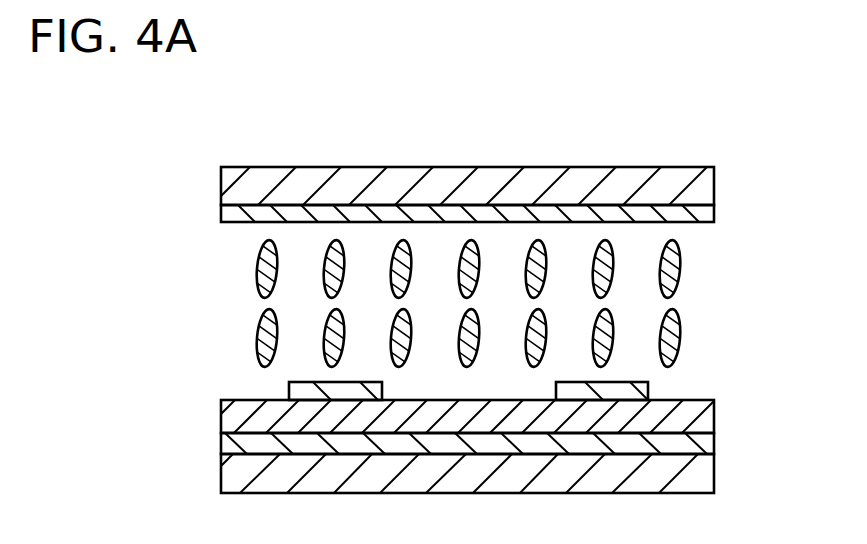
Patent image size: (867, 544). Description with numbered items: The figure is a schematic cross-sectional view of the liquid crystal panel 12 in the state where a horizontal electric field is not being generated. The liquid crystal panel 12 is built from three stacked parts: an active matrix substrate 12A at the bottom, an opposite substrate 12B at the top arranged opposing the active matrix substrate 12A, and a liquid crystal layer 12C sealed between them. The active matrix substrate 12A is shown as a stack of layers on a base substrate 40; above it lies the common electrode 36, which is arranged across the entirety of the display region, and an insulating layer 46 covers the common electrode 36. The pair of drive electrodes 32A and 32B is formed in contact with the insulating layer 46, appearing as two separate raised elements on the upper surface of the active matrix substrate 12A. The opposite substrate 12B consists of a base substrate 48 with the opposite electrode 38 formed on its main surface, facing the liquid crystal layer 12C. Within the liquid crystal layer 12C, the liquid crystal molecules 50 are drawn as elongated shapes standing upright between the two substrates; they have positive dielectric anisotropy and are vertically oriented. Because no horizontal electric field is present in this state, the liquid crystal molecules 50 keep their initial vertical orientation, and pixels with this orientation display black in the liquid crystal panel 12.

The liquid crystal panel 12 is at (216, 160).
The active matrix substrate 12A is at (723, 381).
The opposite substrate 12B is at (723, 167).
The liquid crystal layer 12C is at (723, 225).
The drive electrode 32A is at (333, 390).
The drive electrode 32B is at (602, 390).
The common electrode 36 is at (472, 440).
The opposite electrode 38 is at (424, 215).
The base substrate 40 is at (250, 470).
The insulating layer 46 is at (393, 415).
The base substrate 48 is at (250, 190).
The liquid crystal molecules 50 is at (258, 270).